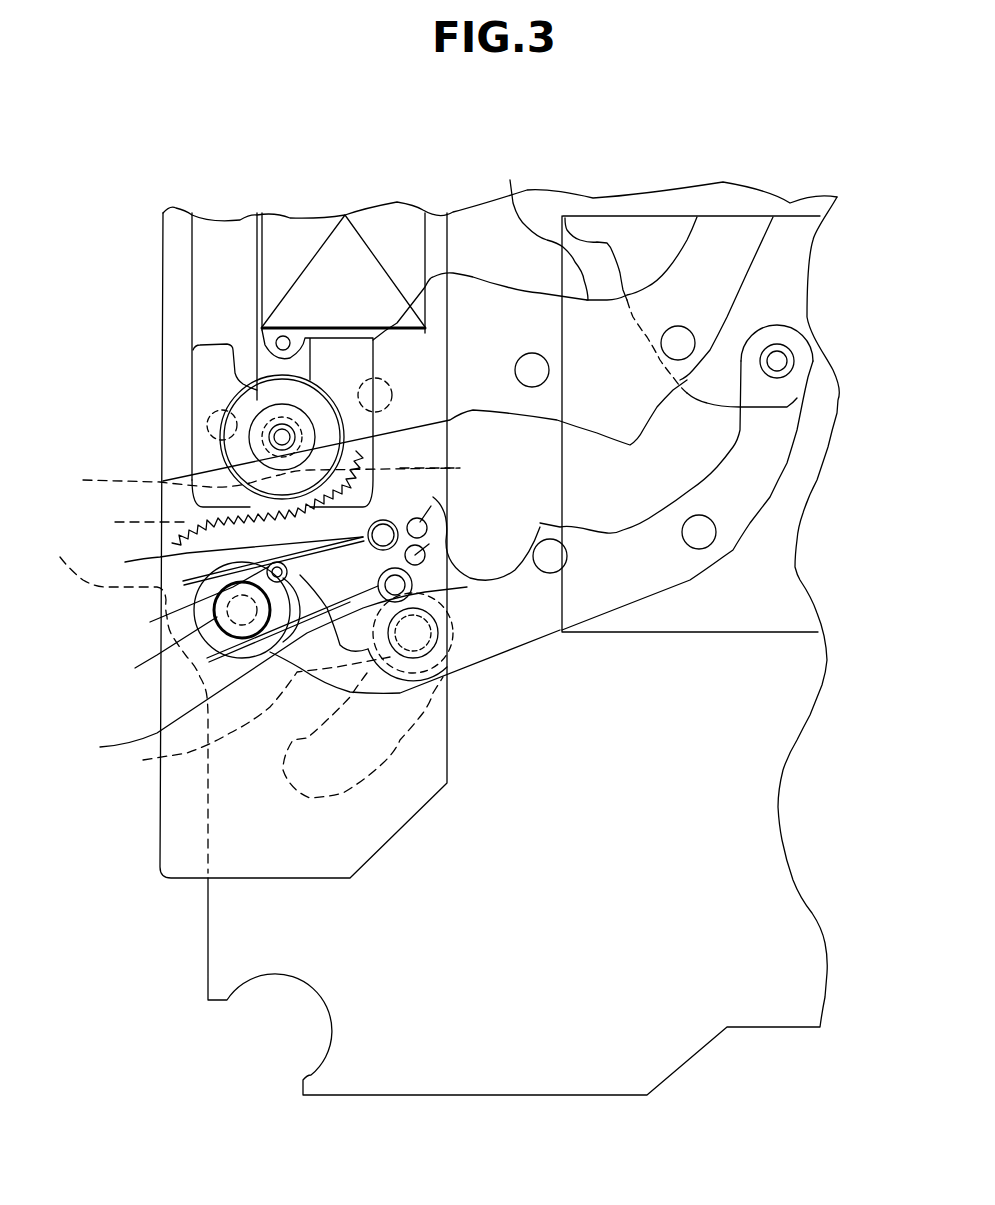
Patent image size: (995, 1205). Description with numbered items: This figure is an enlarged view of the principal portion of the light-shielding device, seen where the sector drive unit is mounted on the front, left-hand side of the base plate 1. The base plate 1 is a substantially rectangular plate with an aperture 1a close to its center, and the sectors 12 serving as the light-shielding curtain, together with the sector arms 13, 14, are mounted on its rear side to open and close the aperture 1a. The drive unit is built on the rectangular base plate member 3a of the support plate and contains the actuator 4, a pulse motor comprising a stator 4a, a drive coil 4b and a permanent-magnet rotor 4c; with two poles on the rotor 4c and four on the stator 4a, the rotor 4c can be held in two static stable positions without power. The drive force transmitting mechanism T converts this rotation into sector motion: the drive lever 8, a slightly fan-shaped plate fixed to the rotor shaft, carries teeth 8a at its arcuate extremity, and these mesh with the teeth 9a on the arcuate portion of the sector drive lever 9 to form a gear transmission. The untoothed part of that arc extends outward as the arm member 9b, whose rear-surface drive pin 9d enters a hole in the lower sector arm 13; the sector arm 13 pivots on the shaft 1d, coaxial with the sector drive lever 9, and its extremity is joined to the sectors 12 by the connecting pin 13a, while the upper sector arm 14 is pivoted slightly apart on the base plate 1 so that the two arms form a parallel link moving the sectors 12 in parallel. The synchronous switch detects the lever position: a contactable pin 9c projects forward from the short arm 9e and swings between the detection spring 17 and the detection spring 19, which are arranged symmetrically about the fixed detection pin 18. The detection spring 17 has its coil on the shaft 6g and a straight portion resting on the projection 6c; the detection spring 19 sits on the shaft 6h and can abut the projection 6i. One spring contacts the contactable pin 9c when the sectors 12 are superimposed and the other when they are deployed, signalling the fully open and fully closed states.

The base plate 1 is at (468, 1097).
The aperture 1a is at (768, 630).
The shaft 1d is at (162, 658).
The base plate member 3a is at (163, 253).
The actuator 4 is at (247, 379).
The stator 4a is at (192, 328).
The drive coil 4b is at (257, 285).
The rotor 4c is at (230, 443).
The projection 6c is at (432, 550).
The shaft 6g is at (410, 603).
The shaft 6h is at (433, 500).
The projection 6i is at (430, 527).
The drive lever 8 is at (278, 486).
The teeth 8a is at (447, 481).
The sector drive lever 9 is at (301, 685).
The teeth 9a is at (136, 528).
The arm member 9b is at (280, 727).
The contactable pin 9c is at (195, 608).
The drive pin 9d is at (450, 642).
The short arm 9e is at (267, 678).
The sectors 12 is at (556, 193).
The sector arm 13 is at (582, 468).
The connecting pin 13a is at (795, 372).
The sector arm 14 is at (510, 180).
The detection spring 17 is at (395, 660).
The detection pin 18 is at (232, 630).
The detection spring 19 is at (232, 561).
The drive force transmitting mechanism T is at (46, 490).